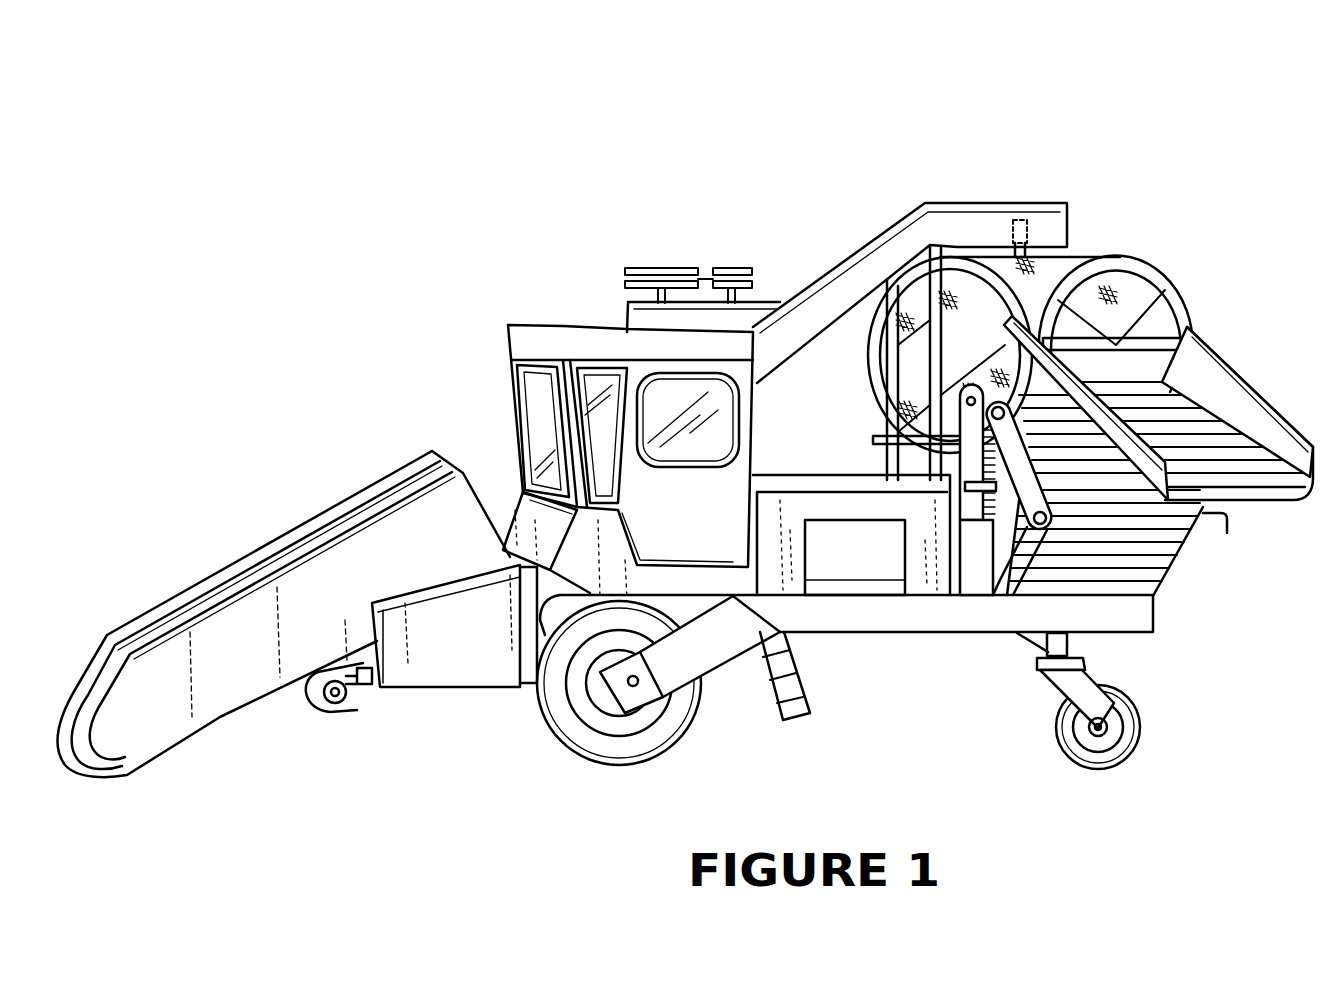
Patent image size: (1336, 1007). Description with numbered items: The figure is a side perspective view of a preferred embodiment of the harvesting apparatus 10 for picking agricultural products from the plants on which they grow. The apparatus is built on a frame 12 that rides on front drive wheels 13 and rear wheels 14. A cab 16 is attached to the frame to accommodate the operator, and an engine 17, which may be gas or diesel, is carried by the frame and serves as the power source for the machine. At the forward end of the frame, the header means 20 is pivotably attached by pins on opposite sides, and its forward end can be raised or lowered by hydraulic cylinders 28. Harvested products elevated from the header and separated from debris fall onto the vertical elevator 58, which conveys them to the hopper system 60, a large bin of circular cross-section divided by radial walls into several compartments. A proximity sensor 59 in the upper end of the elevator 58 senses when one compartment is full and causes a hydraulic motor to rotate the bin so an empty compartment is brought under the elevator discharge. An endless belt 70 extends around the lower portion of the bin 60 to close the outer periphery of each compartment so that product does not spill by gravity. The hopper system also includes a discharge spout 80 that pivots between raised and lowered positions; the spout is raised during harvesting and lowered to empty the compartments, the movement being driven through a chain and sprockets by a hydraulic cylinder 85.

The harvesting apparatus 10 is at (607, 200).
The frame 12 is at (905, 632).
The front drive wheels 13 is at (602, 762).
The rear wheels 14 is at (1062, 728).
The cab 16 is at (538, 327).
The engine 17 is at (840, 492).
The header means 20 is at (258, 546).
The hydraulic cylinders 28 is at (336, 697).
The vertical elevator 58 is at (912, 214).
The proximity sensor 59 is at (1024, 230).
The hopper system 60 is at (1194, 296).
The endless belt 70 is at (1198, 577).
The discharge spout 80 is at (1264, 387).
The hydraulic cylinder 85 is at (997, 565).